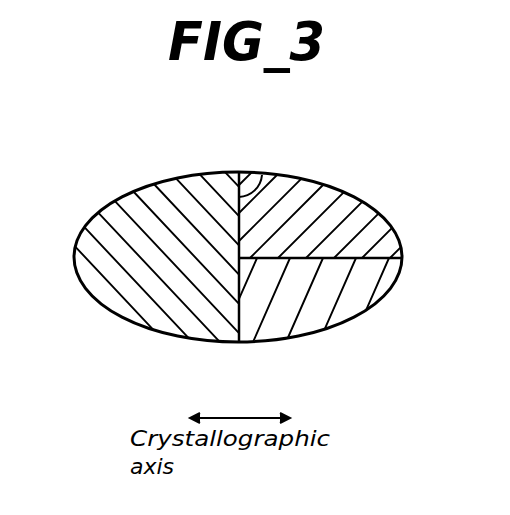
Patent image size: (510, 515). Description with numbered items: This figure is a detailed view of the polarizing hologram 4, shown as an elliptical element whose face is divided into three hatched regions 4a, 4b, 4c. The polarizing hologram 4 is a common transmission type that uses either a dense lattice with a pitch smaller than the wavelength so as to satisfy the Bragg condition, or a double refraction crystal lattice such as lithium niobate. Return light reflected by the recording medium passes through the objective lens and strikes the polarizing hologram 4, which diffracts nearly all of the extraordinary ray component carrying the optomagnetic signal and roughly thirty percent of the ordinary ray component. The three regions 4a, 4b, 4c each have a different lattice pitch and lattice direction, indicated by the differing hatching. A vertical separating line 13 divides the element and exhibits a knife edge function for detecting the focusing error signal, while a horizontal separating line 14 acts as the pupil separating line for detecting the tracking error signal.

The polarizing hologram 4 is at (110, 305).
The first region 4a is at (167, 196).
The second region 4b is at (330, 207).
The third region 4c is at (358, 293).
The separating line 13 is at (263, 175).
The separating line 14 is at (373, 258).